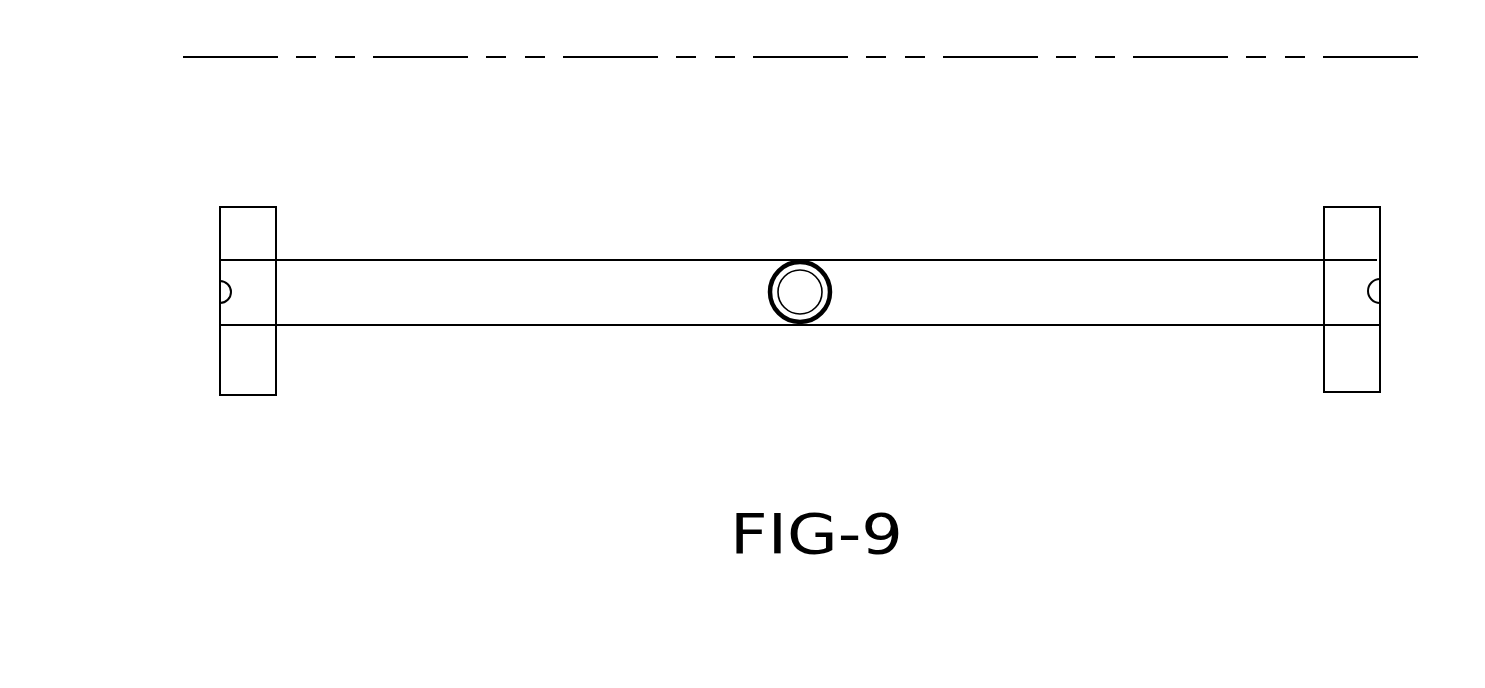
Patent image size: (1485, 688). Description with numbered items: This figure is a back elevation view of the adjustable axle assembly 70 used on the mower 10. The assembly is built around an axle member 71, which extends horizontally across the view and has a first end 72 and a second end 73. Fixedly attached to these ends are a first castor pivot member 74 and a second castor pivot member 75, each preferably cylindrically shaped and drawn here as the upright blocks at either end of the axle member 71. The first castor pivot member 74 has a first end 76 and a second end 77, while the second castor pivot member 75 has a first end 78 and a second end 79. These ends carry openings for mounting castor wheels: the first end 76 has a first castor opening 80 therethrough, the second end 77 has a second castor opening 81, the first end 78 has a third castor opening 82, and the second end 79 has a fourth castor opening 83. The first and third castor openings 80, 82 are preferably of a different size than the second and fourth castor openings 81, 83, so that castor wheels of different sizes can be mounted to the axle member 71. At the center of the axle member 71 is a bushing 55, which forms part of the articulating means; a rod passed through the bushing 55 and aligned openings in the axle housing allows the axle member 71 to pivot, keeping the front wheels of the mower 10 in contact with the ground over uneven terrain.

The mower 10 is at (183, 57).
The bushing 55 is at (820, 308).
The adjustable axle assembly 70 is at (800, 254).
The axle member 71 is at (921, 265).
The first end of axle member 72 is at (1355, 297).
The second end of axle member 73 is at (250, 308).
The first castor pivot member 74 is at (1370, 338).
The second castor pivot member 75 is at (228, 338).
The first end of first castor pivot member 76 is at (1375, 380).
The second end of first castor pivot member 77 is at (1368, 213).
The first end of second castor pivot member 78 is at (229, 383).
The second end of second castor pivot member 79 is at (232, 219).
The first castor opening 80 is at (1350, 406).
The second castor opening 81 is at (1345, 193).
The third castor opening 82 is at (250, 411).
The fourth castor opening 83 is at (270, 195).